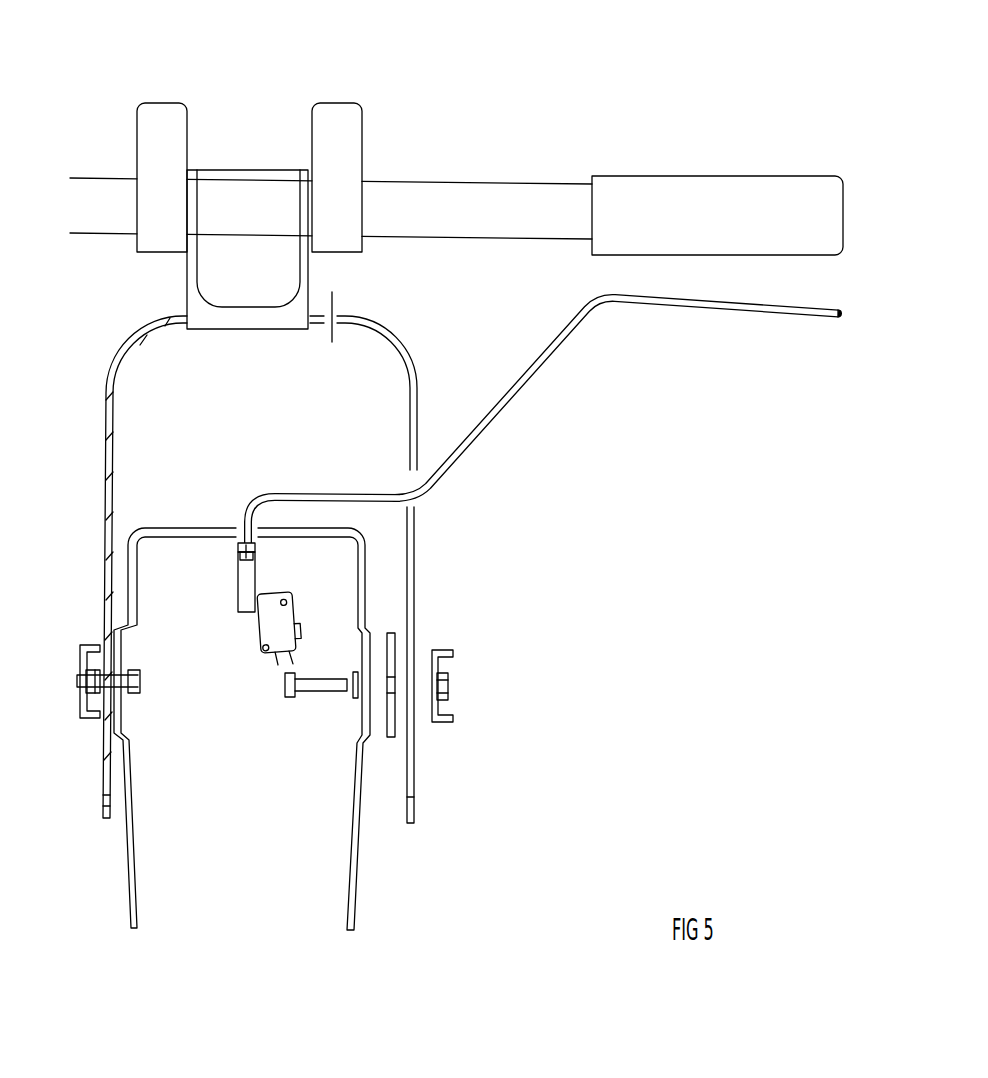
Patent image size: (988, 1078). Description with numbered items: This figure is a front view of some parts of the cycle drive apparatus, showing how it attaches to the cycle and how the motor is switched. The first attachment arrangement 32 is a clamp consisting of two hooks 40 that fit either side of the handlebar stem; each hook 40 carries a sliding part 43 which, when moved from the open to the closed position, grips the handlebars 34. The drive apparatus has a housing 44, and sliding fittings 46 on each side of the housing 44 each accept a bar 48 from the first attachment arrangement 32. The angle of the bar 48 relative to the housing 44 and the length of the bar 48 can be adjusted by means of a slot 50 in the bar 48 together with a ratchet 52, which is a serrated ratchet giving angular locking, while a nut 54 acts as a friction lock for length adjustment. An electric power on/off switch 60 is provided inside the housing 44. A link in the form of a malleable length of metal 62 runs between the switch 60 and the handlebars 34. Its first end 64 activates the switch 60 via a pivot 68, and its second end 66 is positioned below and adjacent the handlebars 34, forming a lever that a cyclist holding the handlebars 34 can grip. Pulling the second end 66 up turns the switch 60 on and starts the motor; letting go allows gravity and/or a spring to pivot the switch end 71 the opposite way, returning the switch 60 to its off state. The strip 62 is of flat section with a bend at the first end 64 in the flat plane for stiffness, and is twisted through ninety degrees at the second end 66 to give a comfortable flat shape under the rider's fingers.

The first attachment arrangement 32 is at (255, 322).
The handlebars 34 is at (553, 217).
The hooks 40 is at (305, 187).
The sliding part 43 is at (337, 128).
The housing 44 is at (128, 770).
The sliding fittings 46 is at (82, 611).
The bar 48 is at (412, 455).
The slot 50 is at (462, 800).
The ratchet 52 is at (385, 647).
The nut 54 is at (450, 677).
The electric power on/off switch 60 is at (277, 620).
The malleable length of metal 62 is at (515, 387).
The first end 64 is at (242, 530).
The second end 66 is at (733, 312).
The pivot 68 is at (240, 550).
The switch end 71 is at (238, 600).